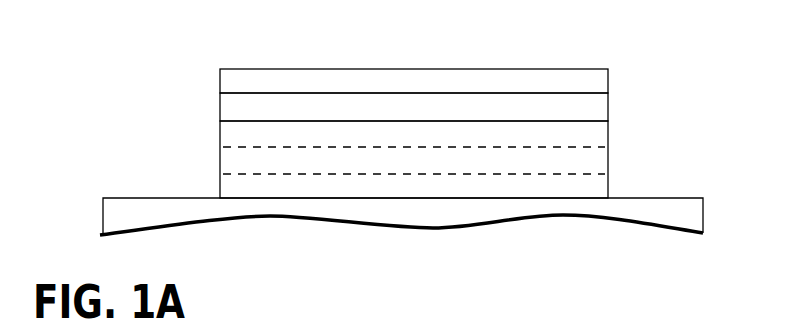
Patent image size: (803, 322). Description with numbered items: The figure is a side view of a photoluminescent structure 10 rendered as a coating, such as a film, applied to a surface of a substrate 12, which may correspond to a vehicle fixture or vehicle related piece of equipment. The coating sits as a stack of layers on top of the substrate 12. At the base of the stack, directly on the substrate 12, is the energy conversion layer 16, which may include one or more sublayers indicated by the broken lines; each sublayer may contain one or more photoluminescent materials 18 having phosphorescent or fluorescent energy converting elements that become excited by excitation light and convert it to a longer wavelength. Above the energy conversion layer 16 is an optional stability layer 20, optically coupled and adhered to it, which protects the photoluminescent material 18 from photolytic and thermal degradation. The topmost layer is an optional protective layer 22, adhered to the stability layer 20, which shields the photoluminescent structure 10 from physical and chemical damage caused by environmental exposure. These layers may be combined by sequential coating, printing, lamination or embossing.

The photoluminescent structure 10 is at (551, 42).
The substrate 12 is at (650, 197).
The energy conversion layer 16 is at (220, 157).
The photoluminescent material 18 is at (567, 159).
The stability layer 20 is at (220, 107).
The protective layer 22 is at (307, 69).